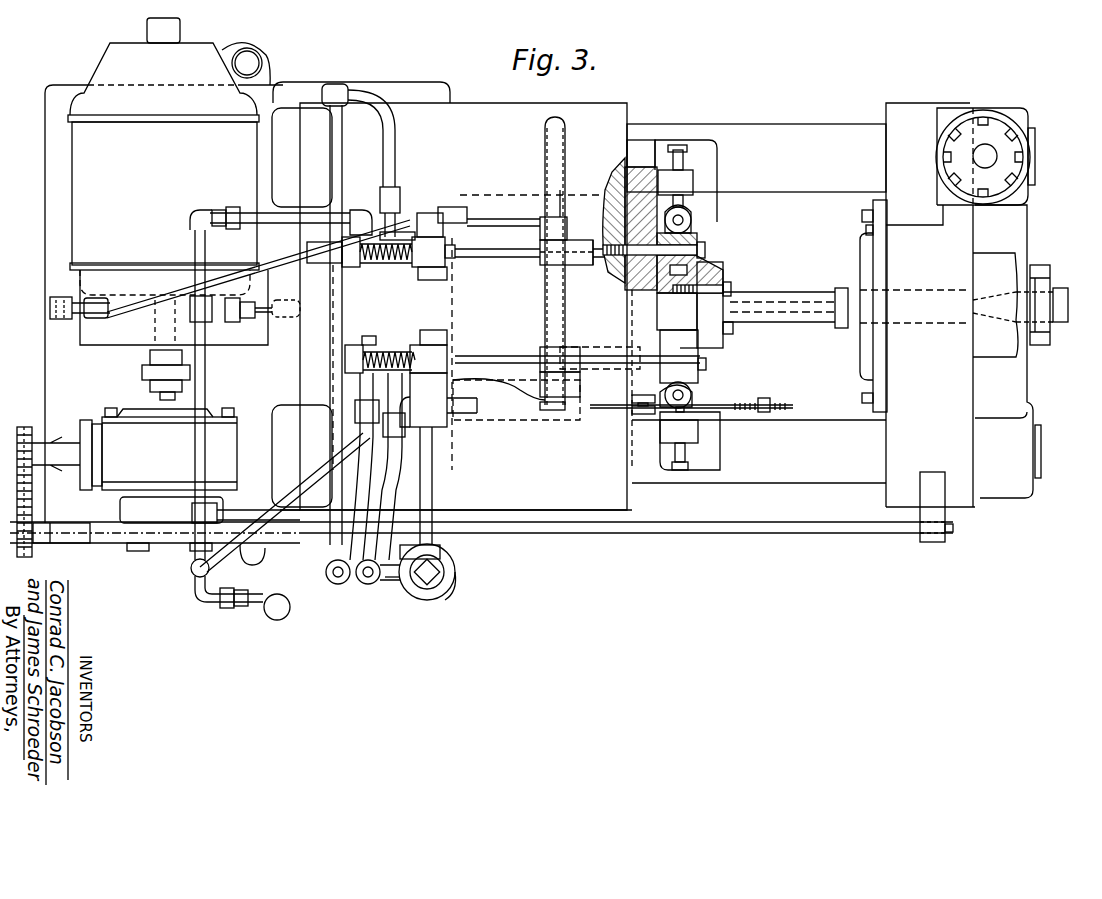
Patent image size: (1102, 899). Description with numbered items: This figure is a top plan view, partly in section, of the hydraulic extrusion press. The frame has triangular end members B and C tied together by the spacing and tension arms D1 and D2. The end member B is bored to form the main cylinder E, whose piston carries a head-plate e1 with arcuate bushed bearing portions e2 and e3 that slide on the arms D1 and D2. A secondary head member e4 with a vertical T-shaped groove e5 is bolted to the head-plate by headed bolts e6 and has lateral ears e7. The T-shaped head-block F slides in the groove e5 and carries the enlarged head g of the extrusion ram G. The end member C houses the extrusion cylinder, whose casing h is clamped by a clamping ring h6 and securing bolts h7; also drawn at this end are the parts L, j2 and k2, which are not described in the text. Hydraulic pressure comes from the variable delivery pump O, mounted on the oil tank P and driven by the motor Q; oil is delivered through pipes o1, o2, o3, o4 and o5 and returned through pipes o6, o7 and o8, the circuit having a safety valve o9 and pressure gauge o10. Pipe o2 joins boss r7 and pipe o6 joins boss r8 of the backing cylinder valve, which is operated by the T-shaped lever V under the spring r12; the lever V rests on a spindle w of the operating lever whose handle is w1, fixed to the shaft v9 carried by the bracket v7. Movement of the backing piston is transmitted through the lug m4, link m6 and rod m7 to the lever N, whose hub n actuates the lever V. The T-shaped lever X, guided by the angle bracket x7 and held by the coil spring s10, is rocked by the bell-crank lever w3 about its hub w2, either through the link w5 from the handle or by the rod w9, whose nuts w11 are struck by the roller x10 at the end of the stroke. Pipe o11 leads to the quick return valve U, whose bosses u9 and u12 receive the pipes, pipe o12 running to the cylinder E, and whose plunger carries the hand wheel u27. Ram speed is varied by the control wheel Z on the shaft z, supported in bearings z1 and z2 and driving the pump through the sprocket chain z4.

The electric motor Q is at (169, 181).
The oil tank P is at (164, 304).
The end member B is at (449, 296).
The variable delivery liquid pressure pump O is at (134, 479).
The pipe o1 is at (206, 383).
The pipe o2 is at (243, 210).
The pipe o3 is at (292, 500).
The pipe o4 is at (228, 318).
The pipe o5 is at (252, 510).
The pipe o6 is at (396, 162).
The pipe o7 is at (395, 600).
The pipe o8 is at (388, 470).
The safety valve o9 is at (283, 620).
The pressure gauge o10 is at (362, 475).
The pipe o11 is at (385, 580).
The pipe o12 is at (432, 468).
The bifurcated lug m4 is at (58, 318).
The link m6 is at (60, 305).
The rod m7 is at (168, 288).
The shaft z is at (32, 555).
The bearing z1 is at (932, 540).
The bearing z2 is at (108, 548).
The sprocket chain z4 is at (70, 545).
The control wheel Z is at (245, 566).
The boss r7 is at (370, 228).
The boss r8 is at (397, 237).
The spring r12 is at (408, 268).
The lever N is at (460, 207).
The hub n is at (440, 230).
The coil spring s10 is at (392, 348).
The spindle w is at (540, 225).
The operating handle w1 is at (562, 170).
The hub w2 is at (438, 335).
The bell-crank lever w3 is at (450, 380).
The link w5 is at (499, 384).
The rod w9 is at (600, 420).
The nuts w11 is at (697, 392).
The angular bracket member v7 is at (583, 240).
The shaft v9 is at (556, 210).
The T-shaped lever V is at (503, 252).
The T-shaped lever X is at (515, 362).
The angle bracket x7 is at (592, 347).
The roller x10 is at (640, 418).
The main cylinder E is at (525, 195).
The head-plate e1 is at (645, 140).
The arcuate bushed bearing portion e2 is at (720, 455).
The arcuate bushed bearing portion e3 is at (705, 143).
The secondary head member e4 is at (700, 243).
The T-shaped groove e5 is at (714, 278).
The headed bolts e6 is at (706, 242).
The ears e7 is at (692, 212).
The T-shaped head-block F is at (677, 338).
The enlarged head g is at (712, 345).
The extrusion ram G is at (772, 292).
The spacing and tension arm D2 is at (756, 158).
The spacing and tension arm D1 is at (1042, 452).
The end member C is at (939, 305).
The casing h is at (860, 350).
The clamping ring h6 is at (866, 230).
The securing bolts h7 is at (862, 216).
The gear L is at (985, 156).
The gear j2 is at (1040, 264).
The collar k2 is at (1062, 288).
The quick return valve U is at (420, 590).
The lateral boss u9 is at (395, 590).
The lateral boss u12 is at (445, 553).
The hand wheel u27 is at (455, 590).